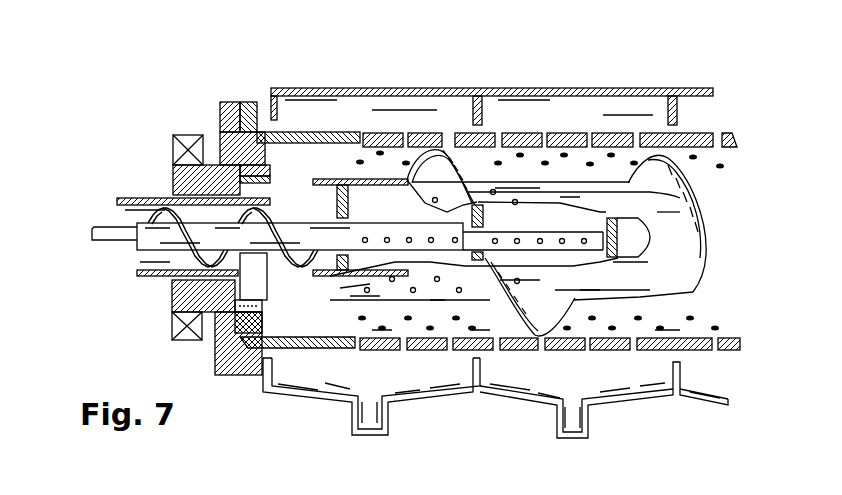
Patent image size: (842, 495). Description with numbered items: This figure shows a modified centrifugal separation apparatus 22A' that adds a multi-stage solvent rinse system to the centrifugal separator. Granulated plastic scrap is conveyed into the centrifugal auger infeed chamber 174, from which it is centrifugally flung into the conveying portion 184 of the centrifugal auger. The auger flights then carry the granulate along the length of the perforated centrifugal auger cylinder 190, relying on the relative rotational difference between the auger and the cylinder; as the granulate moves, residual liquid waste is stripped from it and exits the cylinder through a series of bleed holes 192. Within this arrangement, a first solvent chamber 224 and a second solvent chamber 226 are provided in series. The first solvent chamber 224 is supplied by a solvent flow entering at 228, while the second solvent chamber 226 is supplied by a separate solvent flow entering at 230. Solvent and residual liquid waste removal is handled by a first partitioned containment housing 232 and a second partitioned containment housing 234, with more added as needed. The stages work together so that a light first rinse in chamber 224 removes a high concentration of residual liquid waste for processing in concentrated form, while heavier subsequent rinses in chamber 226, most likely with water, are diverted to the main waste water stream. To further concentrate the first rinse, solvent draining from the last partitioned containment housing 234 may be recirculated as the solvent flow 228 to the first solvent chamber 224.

The modified centrifugal separation apparatus 22A' is at (575, 38).
The bleed holes 192 is at (360, 130).
The perforated centrifugal auger cylinder 190 is at (517, 132).
The conveying portion 184 is at (320, 171).
The centrifugal auger infeed chamber 174 is at (310, 212).
The first solvent chamber 224 is at (400, 212).
The second solvent chamber 226 is at (563, 232).
The solvent flow 228 is at (135, 250).
The solvent flow 230 is at (92, 232).
The first partitioned containment housing 232 is at (430, 402).
The second partitioned containment housing 234 is at (653, 405).